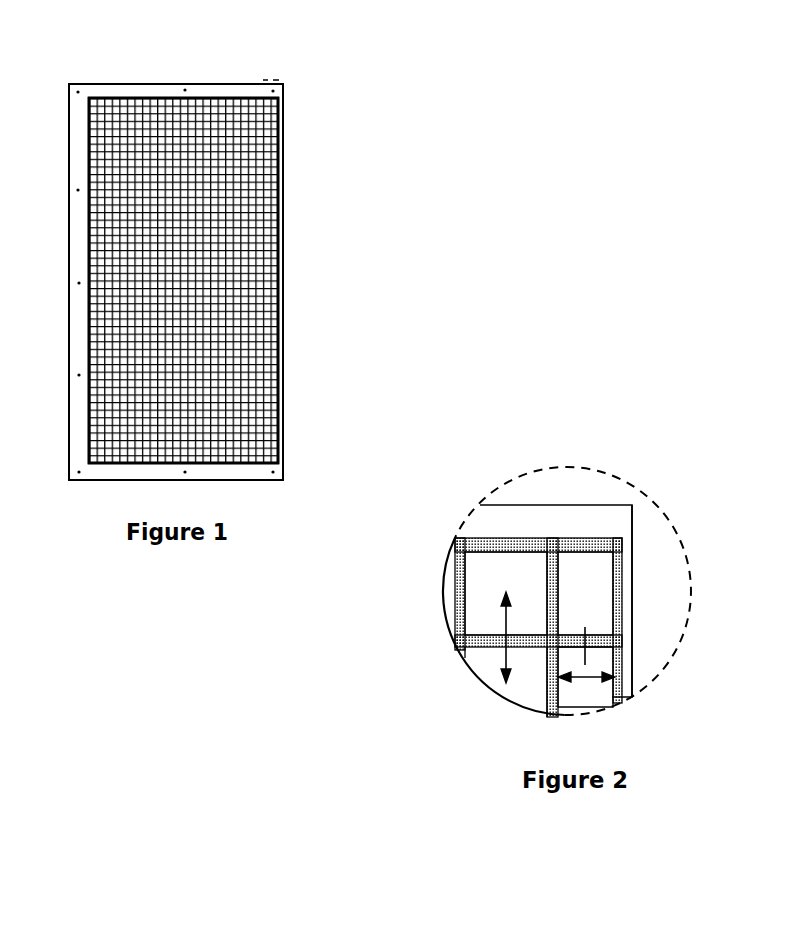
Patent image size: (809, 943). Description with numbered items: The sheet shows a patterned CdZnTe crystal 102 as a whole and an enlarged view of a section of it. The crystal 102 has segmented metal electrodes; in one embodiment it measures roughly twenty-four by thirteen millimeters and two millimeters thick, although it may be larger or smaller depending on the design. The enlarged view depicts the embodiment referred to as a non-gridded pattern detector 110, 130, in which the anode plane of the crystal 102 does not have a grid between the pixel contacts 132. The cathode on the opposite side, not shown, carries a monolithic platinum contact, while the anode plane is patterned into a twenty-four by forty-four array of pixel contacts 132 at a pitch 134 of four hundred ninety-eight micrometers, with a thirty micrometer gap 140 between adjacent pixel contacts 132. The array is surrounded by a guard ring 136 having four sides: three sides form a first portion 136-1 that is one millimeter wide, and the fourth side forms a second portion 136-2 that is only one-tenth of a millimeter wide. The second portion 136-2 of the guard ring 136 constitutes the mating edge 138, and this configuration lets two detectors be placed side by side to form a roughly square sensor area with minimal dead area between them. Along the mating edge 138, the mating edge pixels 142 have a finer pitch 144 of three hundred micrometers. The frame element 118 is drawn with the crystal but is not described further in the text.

In FIG. 1, the patterned CdZnTe crystal 102 is at (280, 263).
In FIG. 1, the non-gridded pattern detector 110 is at (285, 100).
In FIG. 1, the non-gridded pattern detector 130 is at (285, 100).
In FIG. 2, the non-gridded pattern detector 130 is at (505, 487).
In FIG. 1, the frame 118 is at (223, 92).
In FIG. 1, the guard ring 136 is at (223, 92).
In FIG. 2, the pixel contacts 132 is at (480, 597).
In FIG. 2, the pitch 134 is at (508, 650).
In FIG. 2, the first portion of the guard ring 136-1 is at (510, 522).
In FIG. 2, the second portion of the guard ring 136-2 is at (625, 563).
In FIG. 2, the mating edge 138 is at (632, 598).
In FIG. 2, the gap 140 is at (553, 573).
In FIG. 2, the mating edge pixels 142 is at (592, 582).
In FIG. 2, the pitch 144 is at (600, 670).